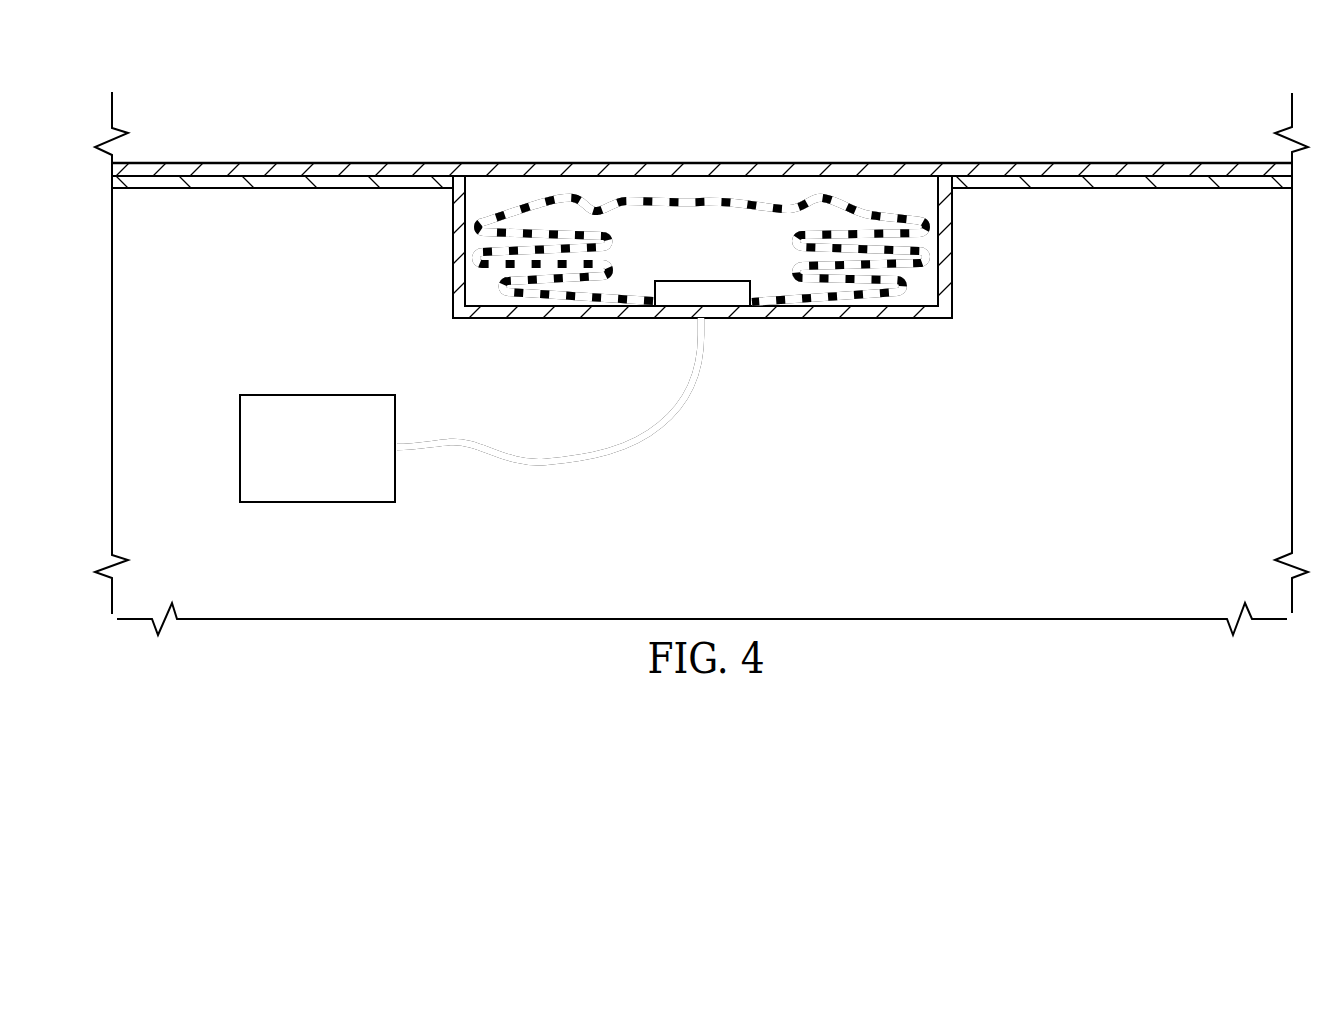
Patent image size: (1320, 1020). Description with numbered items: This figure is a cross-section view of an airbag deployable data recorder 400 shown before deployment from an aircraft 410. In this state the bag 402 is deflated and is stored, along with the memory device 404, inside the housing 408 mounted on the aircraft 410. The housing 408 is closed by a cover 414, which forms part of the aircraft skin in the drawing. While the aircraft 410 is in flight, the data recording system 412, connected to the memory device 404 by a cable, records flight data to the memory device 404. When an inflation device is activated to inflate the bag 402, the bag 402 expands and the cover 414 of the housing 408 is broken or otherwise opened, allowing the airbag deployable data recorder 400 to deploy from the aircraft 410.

The airbag deployable data recorder 400 is at (340, 121).
The bag 402 is at (525, 222).
The memory device 404 is at (723, 298).
The housing 408 is at (458, 241).
The aircraft 410 is at (680, 523).
The data recording system 412 is at (318, 503).
The cover 414 is at (700, 170).